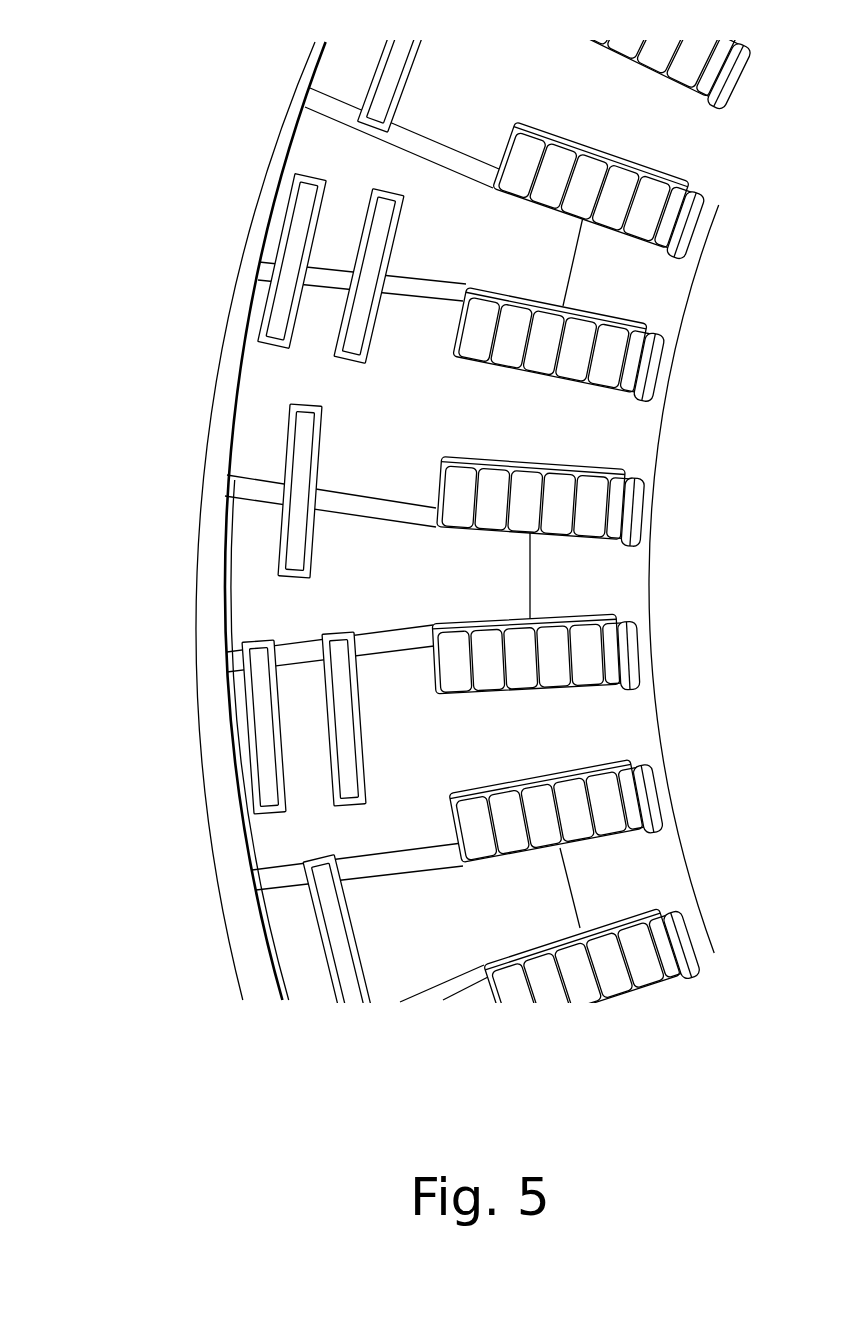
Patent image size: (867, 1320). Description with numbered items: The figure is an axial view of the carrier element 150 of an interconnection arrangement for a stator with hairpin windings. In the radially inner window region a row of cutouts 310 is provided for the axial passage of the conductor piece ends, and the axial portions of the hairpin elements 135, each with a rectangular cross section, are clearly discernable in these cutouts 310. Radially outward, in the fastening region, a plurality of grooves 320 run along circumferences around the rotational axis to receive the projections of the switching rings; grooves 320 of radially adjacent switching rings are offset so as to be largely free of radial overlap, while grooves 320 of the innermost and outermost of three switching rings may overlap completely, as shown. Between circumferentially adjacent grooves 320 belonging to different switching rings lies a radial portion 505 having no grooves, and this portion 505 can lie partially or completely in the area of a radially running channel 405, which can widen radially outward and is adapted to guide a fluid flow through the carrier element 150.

The carrier element 150 is at (121, 42).
The radial portion having no grooves 505 is at (268, 373).
The grooves 320 is at (290, 533).
The cutouts 310 is at (594, 518).
The hairpin elements 135 is at (633, 512).
The channels 405 is at (490, 588).